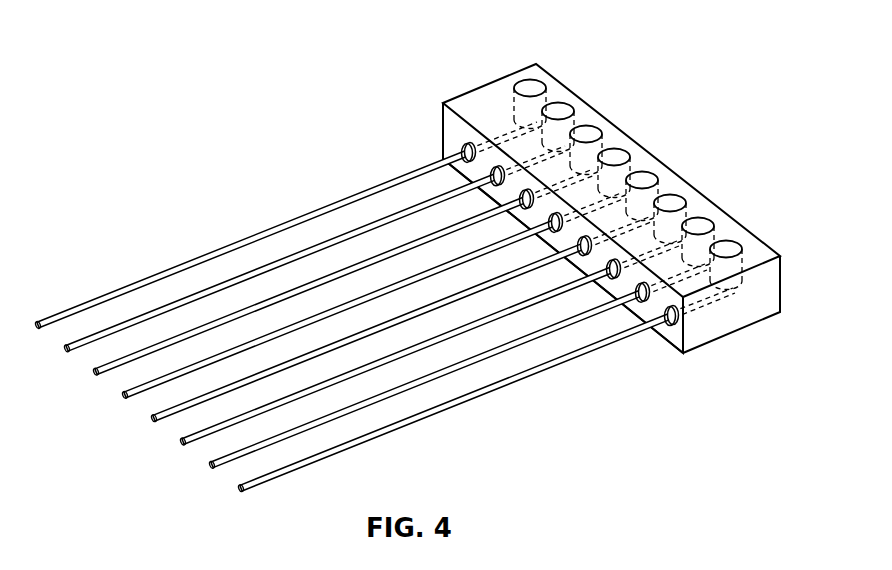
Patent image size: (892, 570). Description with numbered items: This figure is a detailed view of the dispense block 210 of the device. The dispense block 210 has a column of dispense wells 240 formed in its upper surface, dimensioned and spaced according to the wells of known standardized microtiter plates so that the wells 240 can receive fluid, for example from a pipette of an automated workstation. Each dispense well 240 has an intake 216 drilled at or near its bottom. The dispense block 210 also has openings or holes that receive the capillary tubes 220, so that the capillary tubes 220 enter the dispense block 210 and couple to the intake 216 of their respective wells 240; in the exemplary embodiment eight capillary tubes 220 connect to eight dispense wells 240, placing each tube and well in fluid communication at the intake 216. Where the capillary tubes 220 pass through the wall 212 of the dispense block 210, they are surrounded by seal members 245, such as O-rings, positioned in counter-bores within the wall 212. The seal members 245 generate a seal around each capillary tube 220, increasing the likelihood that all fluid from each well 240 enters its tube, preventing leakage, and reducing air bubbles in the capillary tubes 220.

The dispense block 210 is at (483, 98).
The wall 212 is at (680, 333).
The intake 216 is at (723, 300).
The capillary tube 220 is at (353, 195).
The dispense well 240 is at (533, 87).
The seal member 245 is at (465, 147).